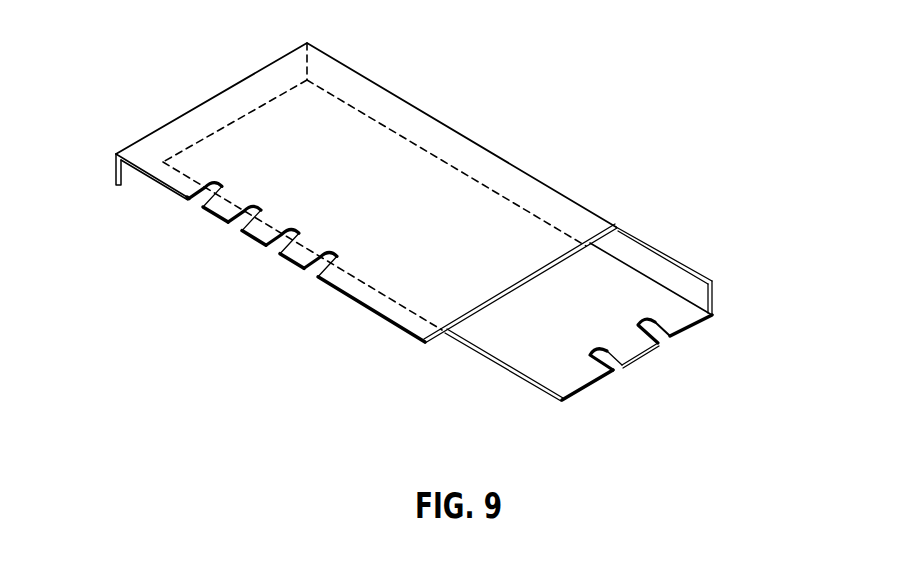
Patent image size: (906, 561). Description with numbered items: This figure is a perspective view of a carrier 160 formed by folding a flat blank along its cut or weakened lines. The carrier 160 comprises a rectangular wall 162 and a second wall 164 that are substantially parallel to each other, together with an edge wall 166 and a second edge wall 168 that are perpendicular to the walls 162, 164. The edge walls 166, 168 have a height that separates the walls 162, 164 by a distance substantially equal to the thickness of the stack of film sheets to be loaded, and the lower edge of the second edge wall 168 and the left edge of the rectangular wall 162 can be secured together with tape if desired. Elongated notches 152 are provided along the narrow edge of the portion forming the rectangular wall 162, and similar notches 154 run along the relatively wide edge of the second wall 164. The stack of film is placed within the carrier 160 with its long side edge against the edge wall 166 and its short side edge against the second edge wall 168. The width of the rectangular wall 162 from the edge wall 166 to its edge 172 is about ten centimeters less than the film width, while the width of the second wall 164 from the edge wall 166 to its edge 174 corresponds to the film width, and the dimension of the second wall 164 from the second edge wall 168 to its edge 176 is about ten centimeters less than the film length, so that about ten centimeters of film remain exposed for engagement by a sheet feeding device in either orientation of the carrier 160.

The carrier 160 is at (712, 194).
The second wall 164 is at (422, 128).
The second edge wall 168 is at (125, 177).
The edge of wall 164 174 is at (397, 331).
The notches 154 is at (240, 216).
The edge of wall 164 176 is at (522, 287).
The rectangular wall 162 is at (630, 285).
The edge wall 166 is at (703, 300).
The edge of wall 162 172 is at (528, 380).
The elongated notches 152 is at (612, 356).